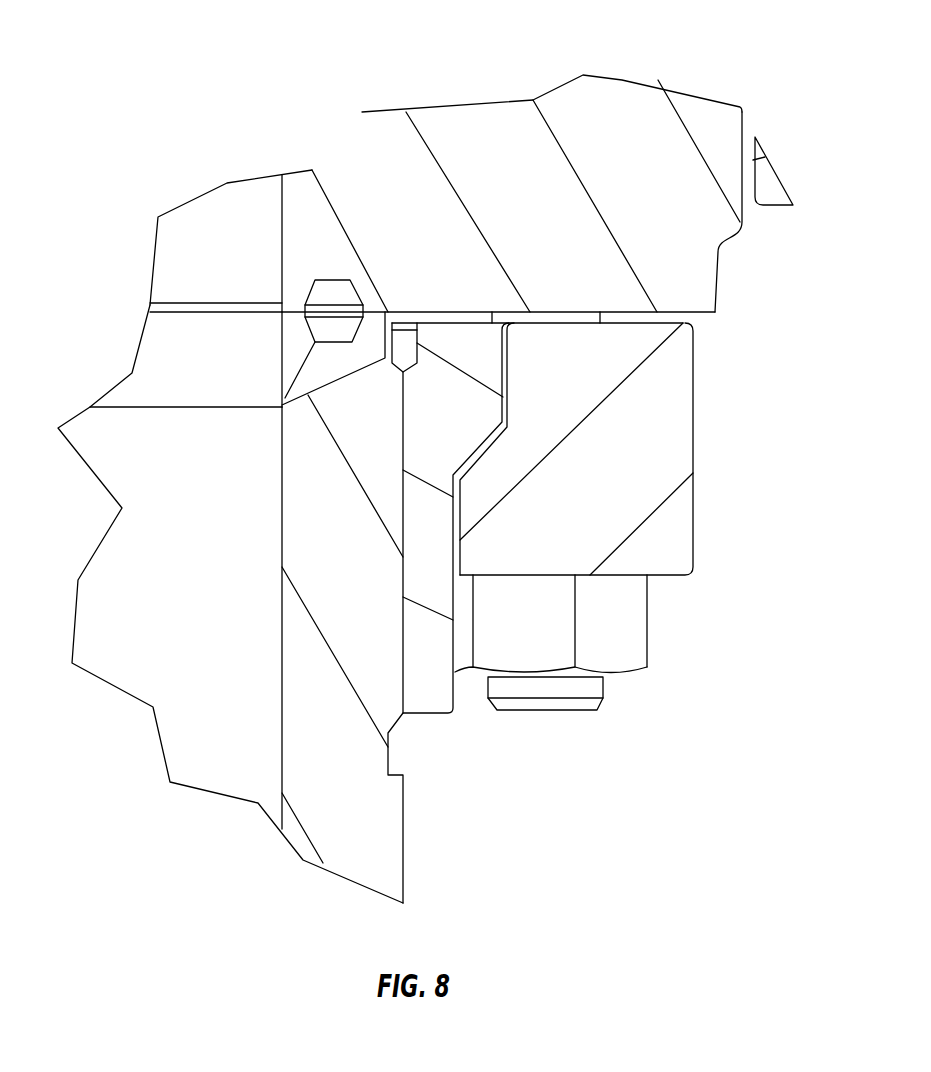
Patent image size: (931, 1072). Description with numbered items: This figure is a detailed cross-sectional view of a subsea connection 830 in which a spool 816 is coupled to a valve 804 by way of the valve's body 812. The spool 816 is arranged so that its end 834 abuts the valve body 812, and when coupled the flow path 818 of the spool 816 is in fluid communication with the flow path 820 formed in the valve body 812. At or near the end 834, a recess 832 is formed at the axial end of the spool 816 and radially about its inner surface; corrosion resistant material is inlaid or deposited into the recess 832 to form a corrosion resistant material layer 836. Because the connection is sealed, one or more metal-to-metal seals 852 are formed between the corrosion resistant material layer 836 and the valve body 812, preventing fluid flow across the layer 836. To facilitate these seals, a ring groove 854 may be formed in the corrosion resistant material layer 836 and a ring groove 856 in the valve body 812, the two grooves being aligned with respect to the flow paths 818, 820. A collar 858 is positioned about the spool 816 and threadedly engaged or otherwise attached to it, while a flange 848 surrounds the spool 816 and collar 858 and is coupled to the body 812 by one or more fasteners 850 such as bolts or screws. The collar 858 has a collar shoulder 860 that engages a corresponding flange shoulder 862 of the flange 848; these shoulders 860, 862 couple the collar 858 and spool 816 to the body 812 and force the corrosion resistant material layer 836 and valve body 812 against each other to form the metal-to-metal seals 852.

The valve 804 is at (622, 80).
The valve body 812 is at (670, 202).
The spool 816 is at (355, 740).
The flow path 818 is at (280, 757).
The flow path 820 is at (282, 188).
The subsea connection 830 is at (688, 798).
The recess 832 is at (328, 390).
The end 834 is at (270, 423).
The corrosion resistant material layer 836 is at (280, 362).
The flange 848 is at (693, 517).
The fasteners 850 is at (640, 658).
The metal-to-metal seals 852 is at (297, 307).
The ring groove 854 is at (335, 342).
The ring groove 856 is at (312, 290).
The collar 858 is at (405, 510).
The collar shoulder 860 is at (470, 457).
The flange shoulder 862 is at (487, 443).